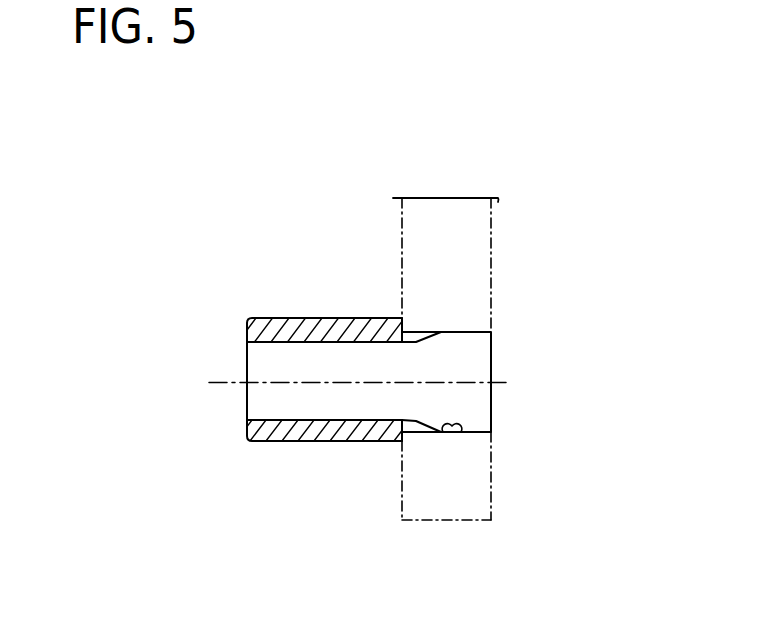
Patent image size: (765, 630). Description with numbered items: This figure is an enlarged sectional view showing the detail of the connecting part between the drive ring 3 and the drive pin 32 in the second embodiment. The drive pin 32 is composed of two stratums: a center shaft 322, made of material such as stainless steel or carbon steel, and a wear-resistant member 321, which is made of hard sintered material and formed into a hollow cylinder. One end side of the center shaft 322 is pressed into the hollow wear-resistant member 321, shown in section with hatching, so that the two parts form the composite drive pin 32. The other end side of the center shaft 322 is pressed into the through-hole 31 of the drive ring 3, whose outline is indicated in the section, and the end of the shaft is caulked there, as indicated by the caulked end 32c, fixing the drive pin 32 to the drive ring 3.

The drive ring 3 is at (458, 205).
The drive pin 32 is at (426, 404).
The wear-resistant member 321 is at (315, 427).
The center shaft 322 is at (480, 407).
The caulked end 32c is at (491, 333).
The through-hole 31 is at (462, 434).